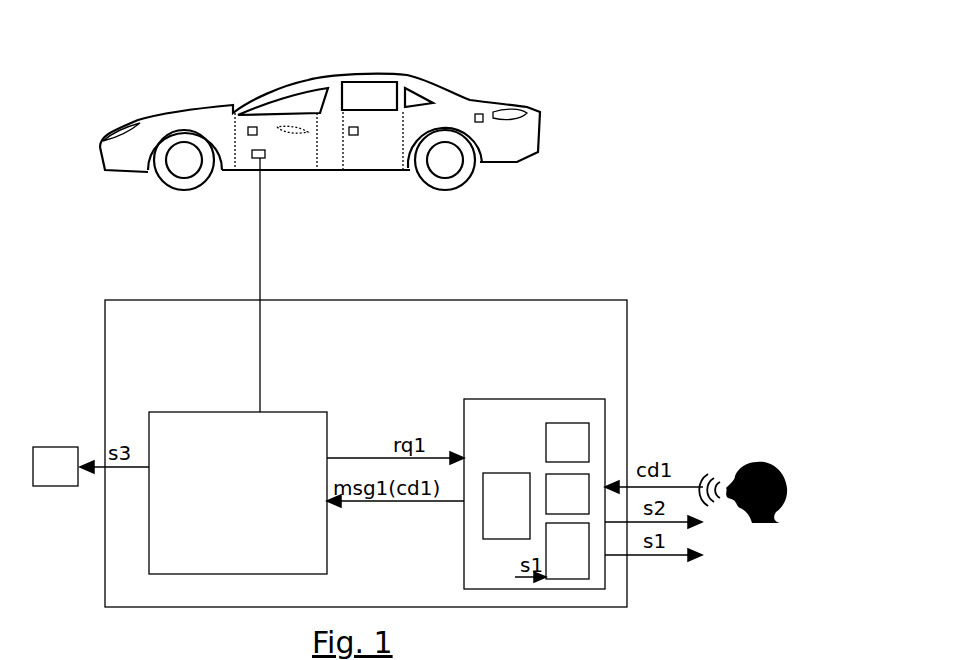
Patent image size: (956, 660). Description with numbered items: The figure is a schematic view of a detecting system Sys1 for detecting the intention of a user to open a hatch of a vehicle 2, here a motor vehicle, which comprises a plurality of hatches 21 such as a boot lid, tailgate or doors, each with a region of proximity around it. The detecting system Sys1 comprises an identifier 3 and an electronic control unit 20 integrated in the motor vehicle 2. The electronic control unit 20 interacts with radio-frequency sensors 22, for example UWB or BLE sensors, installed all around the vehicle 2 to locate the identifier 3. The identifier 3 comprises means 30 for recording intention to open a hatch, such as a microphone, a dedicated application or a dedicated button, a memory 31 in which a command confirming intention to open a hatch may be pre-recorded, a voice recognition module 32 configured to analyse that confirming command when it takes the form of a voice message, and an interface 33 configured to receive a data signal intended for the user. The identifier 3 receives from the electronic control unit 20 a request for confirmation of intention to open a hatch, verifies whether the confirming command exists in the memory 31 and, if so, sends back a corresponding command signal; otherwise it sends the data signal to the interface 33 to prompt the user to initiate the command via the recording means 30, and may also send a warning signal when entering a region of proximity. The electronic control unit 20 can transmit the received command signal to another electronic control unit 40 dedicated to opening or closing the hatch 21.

The vehicle 2 is at (254, 65).
The electronic control unit 20 is at (207, 412).
The hatch 21 is at (292, 160).
The radio-frequency sensors 22 is at (250, 136).
The identifier 3 is at (562, 399).
The means for recording intention to open a hatch 30 is at (567, 442).
The memory 31 is at (500, 473).
The voice recognition module 32 is at (567, 494).
The interface 33 is at (567, 551).
The electronic control unit dedicated to opening/closing the hatch 40 is at (55, 466).
The detecting system Sys1 is at (473, 300).